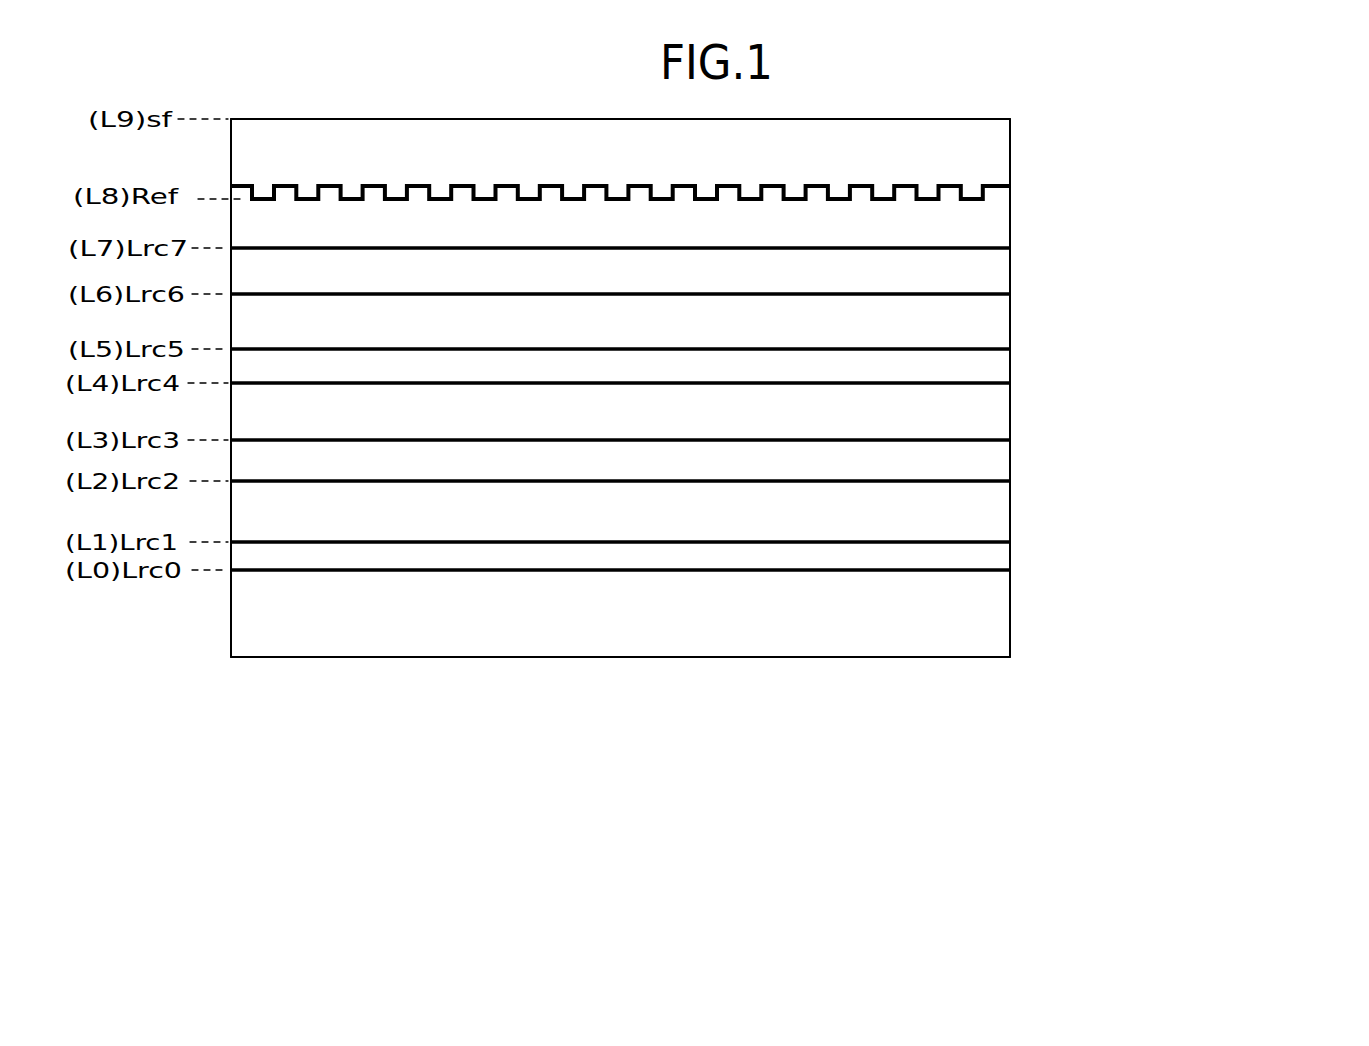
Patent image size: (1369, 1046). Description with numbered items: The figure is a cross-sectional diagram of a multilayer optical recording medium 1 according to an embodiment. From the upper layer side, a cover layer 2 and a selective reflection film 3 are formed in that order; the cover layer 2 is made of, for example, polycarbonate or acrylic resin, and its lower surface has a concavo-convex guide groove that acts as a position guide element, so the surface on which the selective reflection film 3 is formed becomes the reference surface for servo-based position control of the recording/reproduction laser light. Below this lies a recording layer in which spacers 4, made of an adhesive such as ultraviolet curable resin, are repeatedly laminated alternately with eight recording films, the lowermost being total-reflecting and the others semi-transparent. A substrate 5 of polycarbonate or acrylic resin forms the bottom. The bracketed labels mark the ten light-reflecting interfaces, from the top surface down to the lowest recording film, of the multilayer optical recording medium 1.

The multilayer optical recording medium 1 is at (270, 694).
The cover layer 2 is at (985, 148).
The selective reflection film 3 is at (995, 190).
The spacer 4 is at (996, 557).
The substrate 5 is at (966, 624).